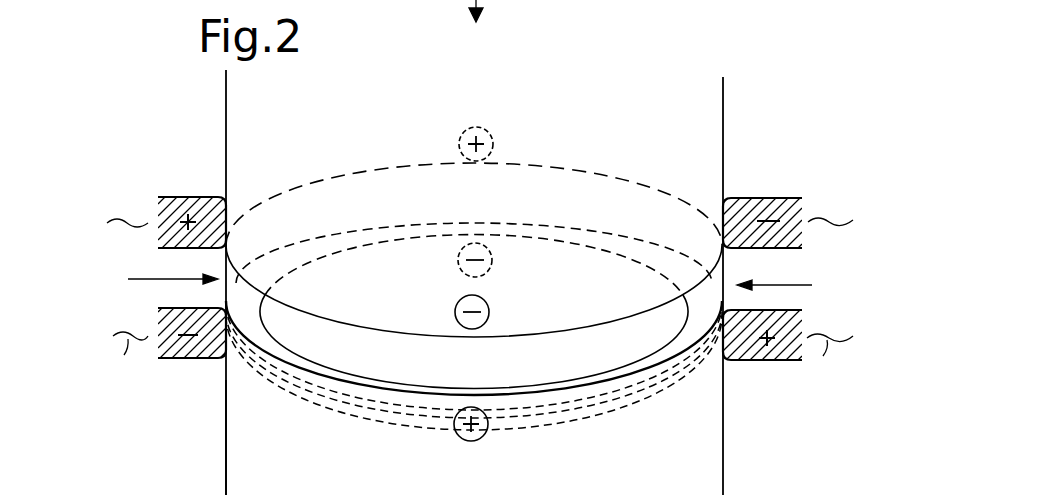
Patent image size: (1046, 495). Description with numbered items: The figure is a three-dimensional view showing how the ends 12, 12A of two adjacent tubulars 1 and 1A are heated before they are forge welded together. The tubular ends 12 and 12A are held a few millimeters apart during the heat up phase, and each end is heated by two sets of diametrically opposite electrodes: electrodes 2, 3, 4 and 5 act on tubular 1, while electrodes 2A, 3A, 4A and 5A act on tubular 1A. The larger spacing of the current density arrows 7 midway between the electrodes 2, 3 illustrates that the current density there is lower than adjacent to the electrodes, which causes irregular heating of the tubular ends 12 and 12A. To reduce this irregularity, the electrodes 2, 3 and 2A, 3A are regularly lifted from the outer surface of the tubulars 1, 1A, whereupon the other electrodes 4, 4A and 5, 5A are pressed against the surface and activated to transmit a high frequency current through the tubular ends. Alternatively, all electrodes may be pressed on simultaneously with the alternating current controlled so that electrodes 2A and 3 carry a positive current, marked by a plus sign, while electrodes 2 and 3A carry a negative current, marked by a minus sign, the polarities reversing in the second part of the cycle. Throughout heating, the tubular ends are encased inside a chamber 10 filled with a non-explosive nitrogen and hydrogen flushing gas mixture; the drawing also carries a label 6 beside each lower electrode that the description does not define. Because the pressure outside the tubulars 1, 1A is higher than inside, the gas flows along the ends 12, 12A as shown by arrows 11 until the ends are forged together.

The tubular 1 is at (222, 457).
The tubular 1A is at (226, 92).
The chamber 10 is at (203, 146).
The electrode 2 is at (188, 359).
The electrode 2A is at (158, 208).
The electrode 3 is at (763, 360).
The electrode 3A is at (783, 198).
The electrode 4 is at (466, 442).
The electrode 4A is at (489, 320).
The electrode 5 is at (492, 259).
The electrode 5A is at (494, 141).
The gas inlet 6 is at (483, 360).
The current density arrows 7 is at (337, 404).
The arrows 11 is at (153, 279).
The tubular end 12 is at (297, 352).
The tubular end 12A is at (570, 329).